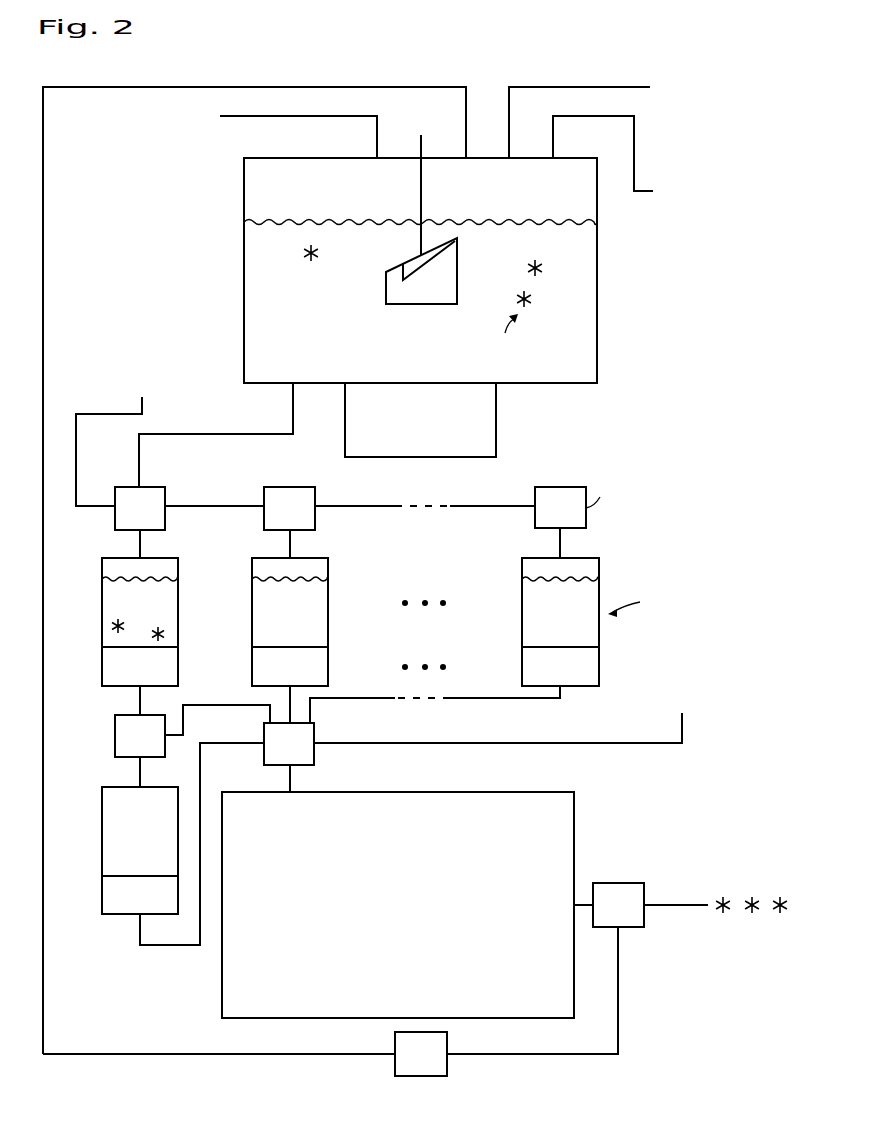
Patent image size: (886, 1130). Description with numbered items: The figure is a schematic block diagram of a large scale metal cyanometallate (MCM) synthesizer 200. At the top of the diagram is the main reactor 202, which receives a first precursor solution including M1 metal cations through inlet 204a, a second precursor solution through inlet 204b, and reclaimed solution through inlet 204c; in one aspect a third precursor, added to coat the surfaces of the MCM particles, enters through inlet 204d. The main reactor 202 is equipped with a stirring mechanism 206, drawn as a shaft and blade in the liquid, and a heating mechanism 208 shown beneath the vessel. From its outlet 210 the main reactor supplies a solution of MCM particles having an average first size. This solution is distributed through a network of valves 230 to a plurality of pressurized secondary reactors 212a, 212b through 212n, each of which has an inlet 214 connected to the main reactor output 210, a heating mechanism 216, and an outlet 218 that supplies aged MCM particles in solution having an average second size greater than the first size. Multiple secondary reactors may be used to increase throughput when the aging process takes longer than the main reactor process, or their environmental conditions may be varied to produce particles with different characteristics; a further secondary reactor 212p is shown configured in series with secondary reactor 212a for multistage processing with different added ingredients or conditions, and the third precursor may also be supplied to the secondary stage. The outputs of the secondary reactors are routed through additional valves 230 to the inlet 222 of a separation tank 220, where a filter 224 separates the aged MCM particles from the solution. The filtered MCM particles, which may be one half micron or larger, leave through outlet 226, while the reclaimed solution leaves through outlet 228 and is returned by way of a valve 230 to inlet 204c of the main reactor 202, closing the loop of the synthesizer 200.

The synthesizer 200 is at (556, 37).
The main reactor 202 is at (358, 157).
The inlet 204a is at (585, 86).
The inlet 204b is at (635, 167).
The inlet 204c is at (486, 78).
The inlet 204d is at (358, 116).
The stirring mechanism 206 is at (363, 279).
The heating mechanism 208 is at (440, 451).
The outlet 210 is at (293, 406).
The pressurized secondary reactor 212a is at (165, 610).
The pressurized secondary reactor 212b is at (315, 624).
The pressurized secondary reactor 212n is at (585, 624).
The secondary reactor 212p is at (165, 842).
The inlet 214 is at (138, 554).
The heating mechanism 216 is at (158, 677).
The outlet 218 is at (138, 710).
The separation tank 220 is at (310, 792).
The inlet 222 is at (289, 788).
The filter 224 is at (628, 858).
The outlet 226 is at (683, 907).
The outlet 228 is at (505, 1053).
The valves 230 is at (158, 517).